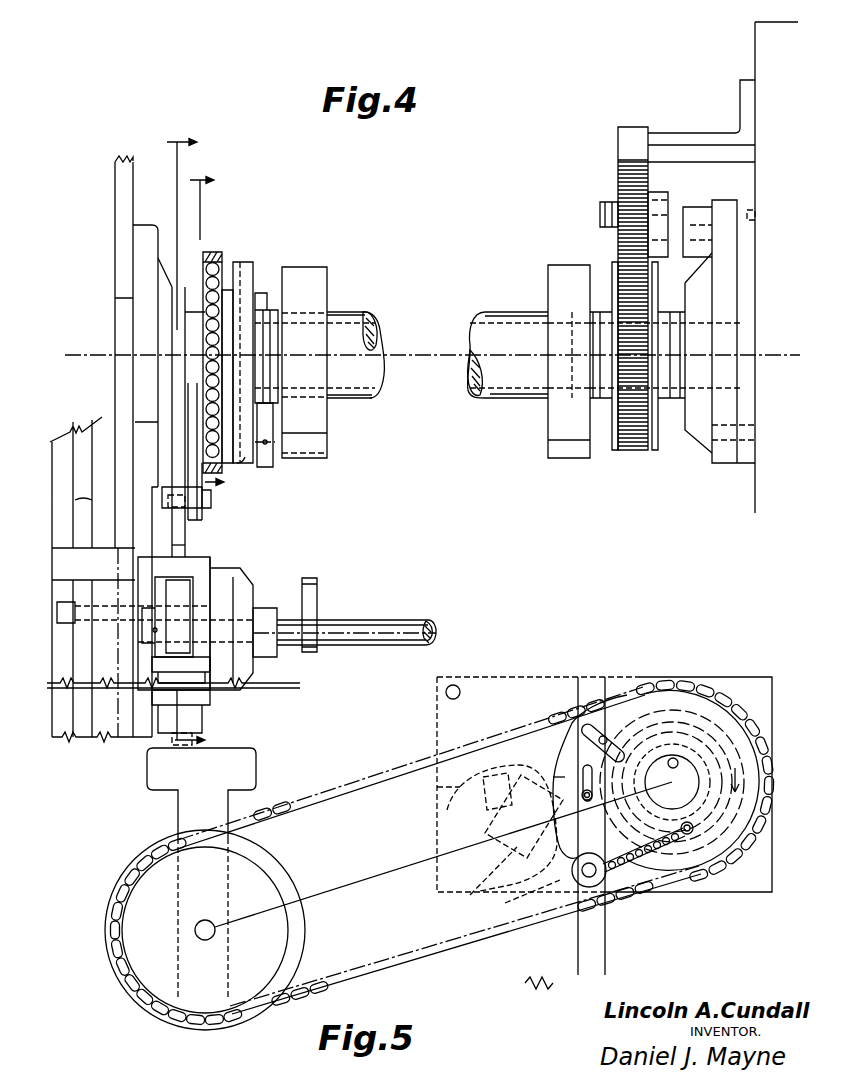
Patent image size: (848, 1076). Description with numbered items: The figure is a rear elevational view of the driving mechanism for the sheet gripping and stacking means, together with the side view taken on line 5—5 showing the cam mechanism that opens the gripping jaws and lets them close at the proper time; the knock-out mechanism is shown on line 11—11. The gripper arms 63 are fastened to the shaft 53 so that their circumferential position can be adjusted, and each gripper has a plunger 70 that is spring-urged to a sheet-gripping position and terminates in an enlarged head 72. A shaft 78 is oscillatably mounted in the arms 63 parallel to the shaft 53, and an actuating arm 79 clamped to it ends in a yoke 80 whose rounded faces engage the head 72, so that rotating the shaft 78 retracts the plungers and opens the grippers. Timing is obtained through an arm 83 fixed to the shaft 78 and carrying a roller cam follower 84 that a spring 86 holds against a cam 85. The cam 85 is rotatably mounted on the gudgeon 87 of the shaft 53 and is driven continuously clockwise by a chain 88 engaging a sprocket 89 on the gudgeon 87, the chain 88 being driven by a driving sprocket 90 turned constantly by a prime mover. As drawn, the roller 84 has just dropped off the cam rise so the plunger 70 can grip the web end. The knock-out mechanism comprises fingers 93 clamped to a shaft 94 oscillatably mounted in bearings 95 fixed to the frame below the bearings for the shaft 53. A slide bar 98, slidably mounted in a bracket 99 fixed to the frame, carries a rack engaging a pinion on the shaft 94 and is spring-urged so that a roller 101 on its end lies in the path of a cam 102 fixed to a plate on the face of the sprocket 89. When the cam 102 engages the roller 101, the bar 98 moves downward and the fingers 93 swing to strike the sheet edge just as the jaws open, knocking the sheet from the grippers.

In FIG. 4, the section line 5— 5 is at (214, 331).
In FIG. 4, the section line 11— 11 is at (199, 441).
In FIG. 4, the shaft 53 is at (474, 395).
In FIG. 5, the shaft 53 is at (676, 760).
In FIG. 4, the arms 63 is at (305, 272).
In FIG. 5, the plunger 70 is at (480, 808).
In FIG. 5, the enlarged head 72 is at (485, 772).
In FIG. 5, the shaft 78 is at (490, 860).
In FIG. 5, the actuating arm 79 is at (476, 881).
In FIG. 5, the yoke 80 is at (436, 790).
In FIG. 4, the arm 83 is at (267, 467).
In FIG. 5, the arm 83 is at (520, 898).
In FIG. 4, the roller cam follower 84 is at (250, 463).
In FIG. 5, the roller cam follower 84 is at (588, 888).
In FIG. 4, the cam 85 is at (243, 262).
In FIG. 5, the cam 85 is at (553, 777).
In FIG. 5, the spring 86 is at (690, 850).
In FIG. 4, the gudgeon 87 is at (227, 290).
In FIG. 4, the chain 88 is at (205, 255).
In FIG. 5, the chain 88 is at (342, 984).
In FIG. 4, the sprocket 89 is at (213, 255).
In FIG. 5, the sprocket 89 is at (697, 847).
In FIG. 5, the driving sprocket 90 is at (243, 1005).
In FIG. 4, the knock-out finger 93 is at (318, 580).
In FIG. 4, the shaft 94 is at (360, 620).
In FIG. 4, the bearings 95 is at (217, 567).
In FIG. 4, the slide bar 98 is at (180, 545).
In FIG. 4, the bracket 99 is at (203, 598).
In FIG. 4, the roller 101 is at (195, 517).
In FIG. 4, the cam 102 is at (190, 460).